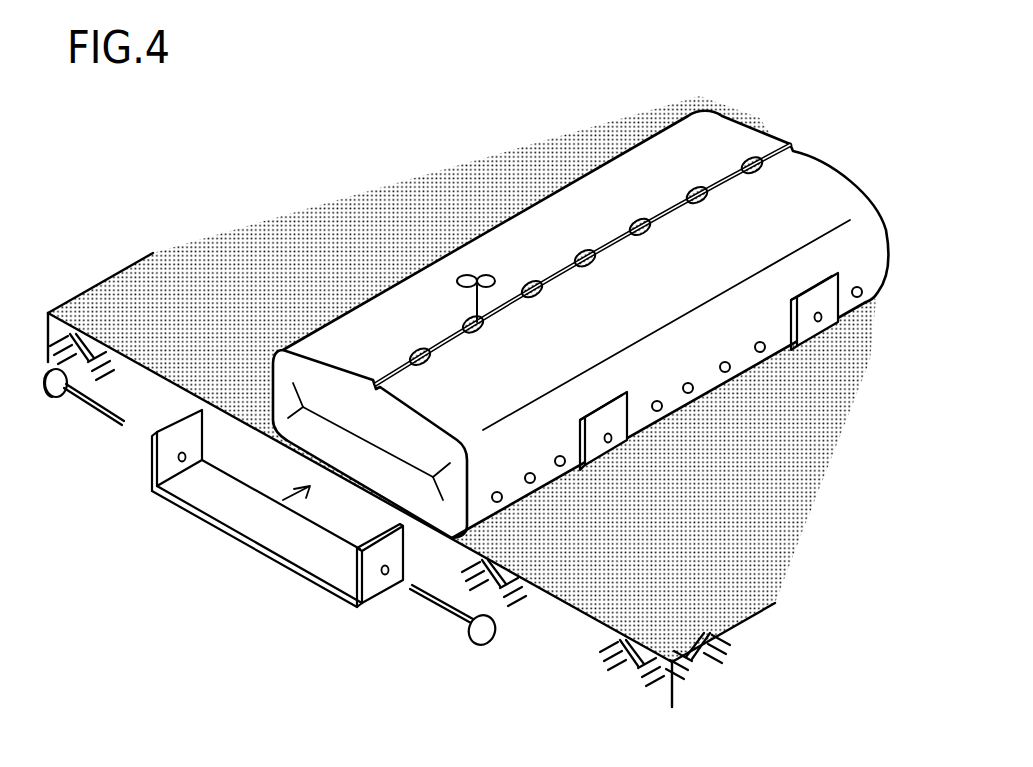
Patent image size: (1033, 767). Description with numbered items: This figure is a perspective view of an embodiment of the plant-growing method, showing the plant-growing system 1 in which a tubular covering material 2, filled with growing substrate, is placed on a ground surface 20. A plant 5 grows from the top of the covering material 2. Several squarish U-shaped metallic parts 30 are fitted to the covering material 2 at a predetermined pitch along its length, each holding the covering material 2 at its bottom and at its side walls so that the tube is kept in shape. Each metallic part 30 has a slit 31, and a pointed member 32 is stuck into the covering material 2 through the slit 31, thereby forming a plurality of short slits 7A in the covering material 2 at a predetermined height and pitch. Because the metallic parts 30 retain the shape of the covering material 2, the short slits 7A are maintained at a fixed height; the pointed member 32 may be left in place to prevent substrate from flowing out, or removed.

The plant-growing system 1 is at (580, 300).
The tubular covering material 2 is at (663, 148).
The plant 5 is at (467, 277).
The short slits 7A is at (733, 370).
The ground surface 20 is at (605, 622).
The squarish U-shaped metallic part 30 is at (288, 570).
The slit 31 is at (383, 573).
The pointed member 32 is at (497, 627).